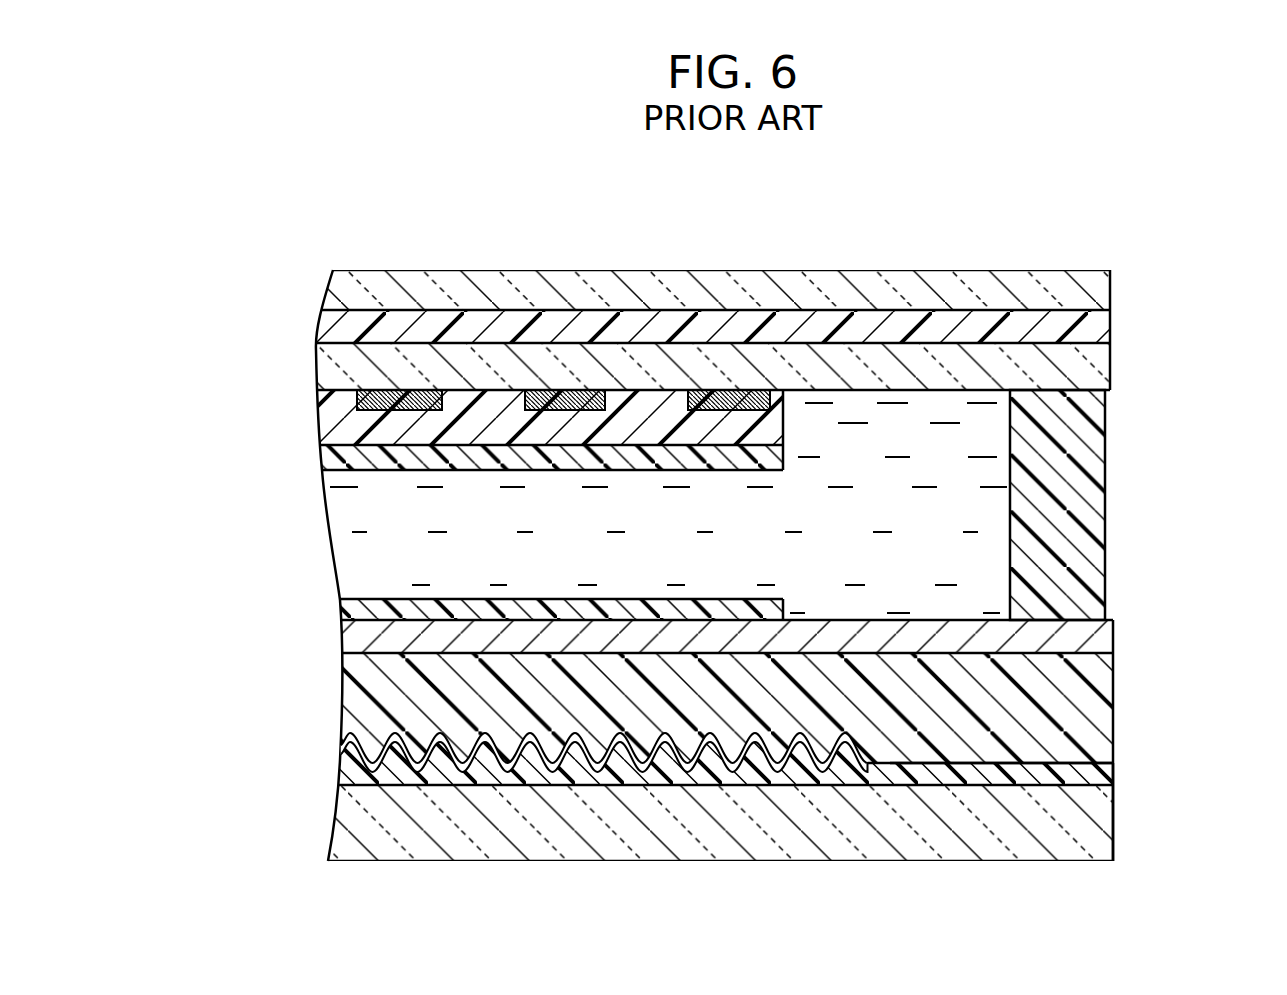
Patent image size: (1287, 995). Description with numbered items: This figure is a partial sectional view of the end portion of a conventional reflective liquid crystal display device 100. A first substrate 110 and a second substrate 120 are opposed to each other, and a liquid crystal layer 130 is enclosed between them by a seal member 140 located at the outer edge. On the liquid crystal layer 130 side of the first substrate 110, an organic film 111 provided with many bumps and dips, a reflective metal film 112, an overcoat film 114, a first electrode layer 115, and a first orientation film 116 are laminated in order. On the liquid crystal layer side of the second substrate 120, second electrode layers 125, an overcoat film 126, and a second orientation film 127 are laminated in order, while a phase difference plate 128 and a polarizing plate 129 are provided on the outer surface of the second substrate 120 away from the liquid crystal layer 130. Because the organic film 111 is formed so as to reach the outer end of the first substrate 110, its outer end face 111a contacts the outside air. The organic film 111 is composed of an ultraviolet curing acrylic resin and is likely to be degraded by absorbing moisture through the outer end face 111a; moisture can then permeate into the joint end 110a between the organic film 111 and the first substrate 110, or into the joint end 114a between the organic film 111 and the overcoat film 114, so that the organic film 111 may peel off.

The reflective liquid crystal display device 100 is at (1075, 241).
The first substrate 110 is at (350, 835).
The joint end of the organic film and the first substrate 110a is at (1113, 785).
The organic film 111 is at (350, 778).
The outer end face of the organic film 111a is at (1113, 774).
The reflective metal film 112 is at (352, 742).
The overcoat film 114 is at (352, 698).
The joint end of the organic film and the overcoat film 114a is at (1113, 763).
The first electrode layer 115 is at (352, 640).
The first orientation film 116 is at (350, 612).
The second substrate 120 is at (340, 370).
The second electrode layers 125 is at (725, 402).
The overcoat film 126 is at (338, 425).
The second orientation film 127 is at (340, 460).
The phase difference plate 128 is at (340, 327).
The polarizing plate 129 is at (345, 298).
The liquid crystal layer 130 is at (352, 520).
The seal member 140 is at (1078, 478).